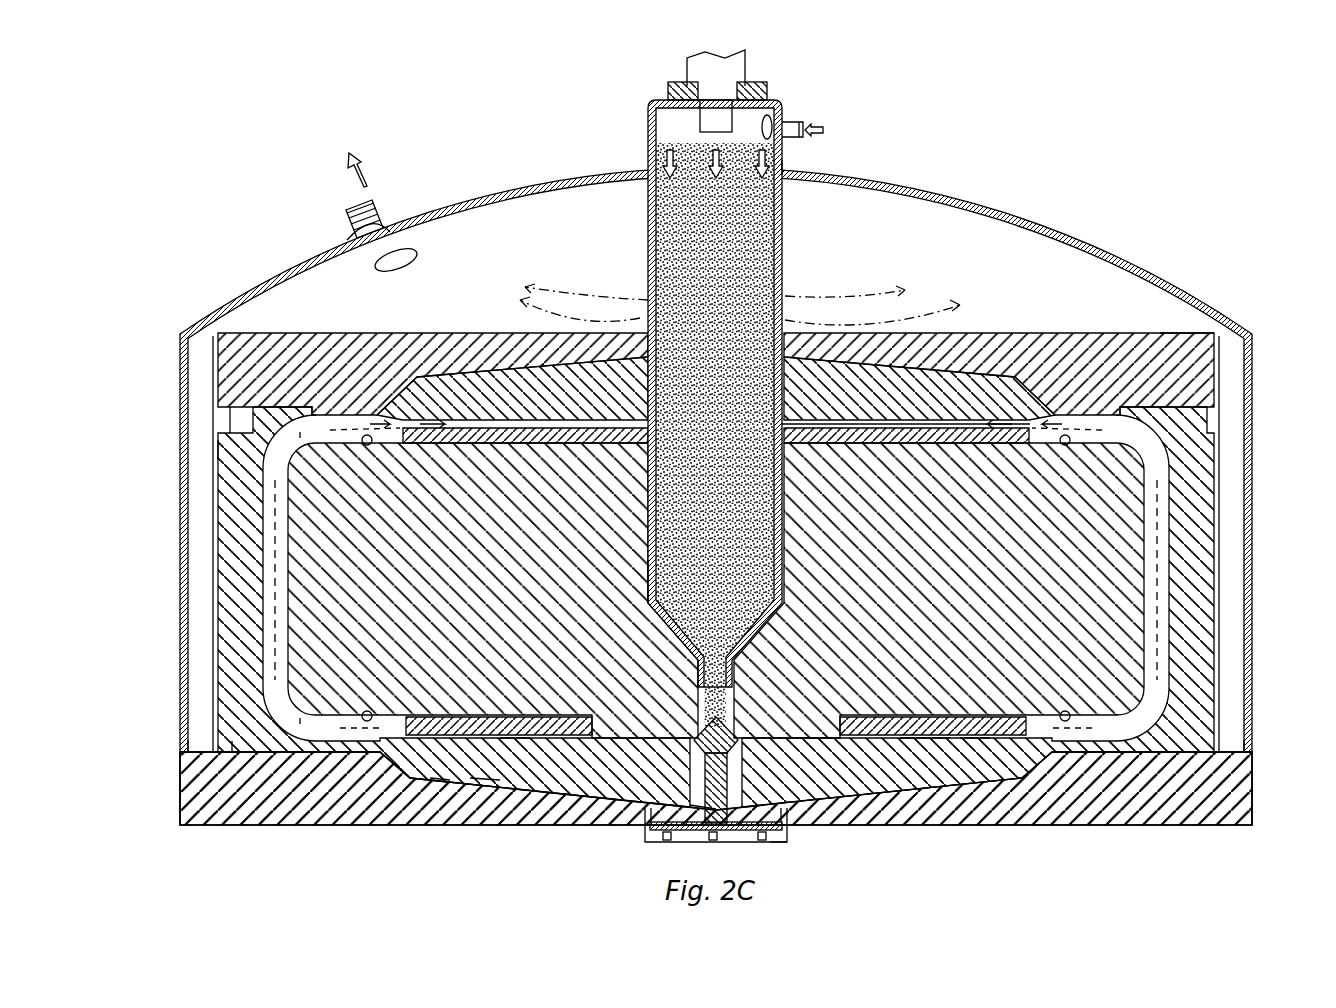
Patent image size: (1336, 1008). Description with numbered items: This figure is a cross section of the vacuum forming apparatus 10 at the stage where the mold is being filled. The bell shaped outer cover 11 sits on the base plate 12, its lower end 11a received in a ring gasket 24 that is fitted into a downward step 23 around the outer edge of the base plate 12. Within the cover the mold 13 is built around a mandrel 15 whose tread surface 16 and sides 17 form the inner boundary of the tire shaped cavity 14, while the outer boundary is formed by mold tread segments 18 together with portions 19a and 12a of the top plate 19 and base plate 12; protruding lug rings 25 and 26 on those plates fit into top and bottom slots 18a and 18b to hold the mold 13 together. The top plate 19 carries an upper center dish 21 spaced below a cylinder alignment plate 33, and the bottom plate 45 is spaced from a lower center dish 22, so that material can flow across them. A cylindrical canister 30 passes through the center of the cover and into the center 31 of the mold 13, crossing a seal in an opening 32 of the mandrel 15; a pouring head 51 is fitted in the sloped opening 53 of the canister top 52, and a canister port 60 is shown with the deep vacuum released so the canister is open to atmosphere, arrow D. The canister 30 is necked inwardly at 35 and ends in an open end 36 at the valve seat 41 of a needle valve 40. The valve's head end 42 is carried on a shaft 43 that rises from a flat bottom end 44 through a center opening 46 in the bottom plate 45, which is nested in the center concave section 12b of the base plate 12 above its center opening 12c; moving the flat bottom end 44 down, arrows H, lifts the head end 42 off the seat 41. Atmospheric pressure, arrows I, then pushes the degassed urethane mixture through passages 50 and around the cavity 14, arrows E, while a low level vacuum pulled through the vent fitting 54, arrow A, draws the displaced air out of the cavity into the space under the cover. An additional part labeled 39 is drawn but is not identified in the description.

The vacuum forming apparatus 10 is at (1107, 140).
The bell shaped outer cover 11 is at (1080, 240).
The lower end of the bell shaped cover 11a is at (200, 750).
The base plate 12 is at (1210, 795).
The portion of bottom plate 12a is at (1105, 745).
The center concave section 12b is at (440, 780).
The center opening 12c is at (700, 790).
The mold 13 is at (863, 330).
The cavity 14 is at (262, 510).
The mandrel 15 is at (970, 584).
The outer or tread surface 16 is at (287, 593).
The sides 17 is at (312, 416).
The mold tread segments 18 is at (233, 555).
The top slot 18a is at (218, 449).
The bottom slot 18b is at (230, 756).
The top plate 19 is at (1087, 333).
The portion of top plate 19a is at (1177, 333).
The upper center dish 21 is at (968, 420).
The lower center dish 22 is at (925, 735).
The step 23 is at (190, 762).
The ring gasket 24 is at (218, 752).
The protruding lug ring 25 is at (229, 432).
The protruding lug ring 26 is at (232, 735).
The cylindrical canister 30 is at (863, 110).
The center of the mold 31 is at (655, 380).
The opening 32 is at (650, 575).
The cylinder alignment plate 33 is at (830, 380).
The necked lower end 35 is at (840, 680).
The canister open end 36 is at (690, 695).
The hatched strip 39 is at (640, 423).
The needle valve 40 is at (710, 760).
The valve seat 41 is at (788, 836).
The head end 42 is at (712, 832).
The shaft 43 is at (740, 815).
The flat bottom end 44 is at (775, 842).
The bottom plate 45 is at (487, 763).
The center opening 46 is at (712, 745).
The passage 50 is at (513, 733).
The pouring head 51 is at (742, 64).
The canister top 52 is at (670, 84).
The opening 53 is at (767, 86).
The vent fitting 54 is at (367, 218).
The canister port 60 is at (783, 118).
The arrow A is at (363, 170).
The arrow D is at (813, 137).
The arrows E is at (292, 437).
The arrows H is at (720, 852).
The arrows I is at (657, 162).